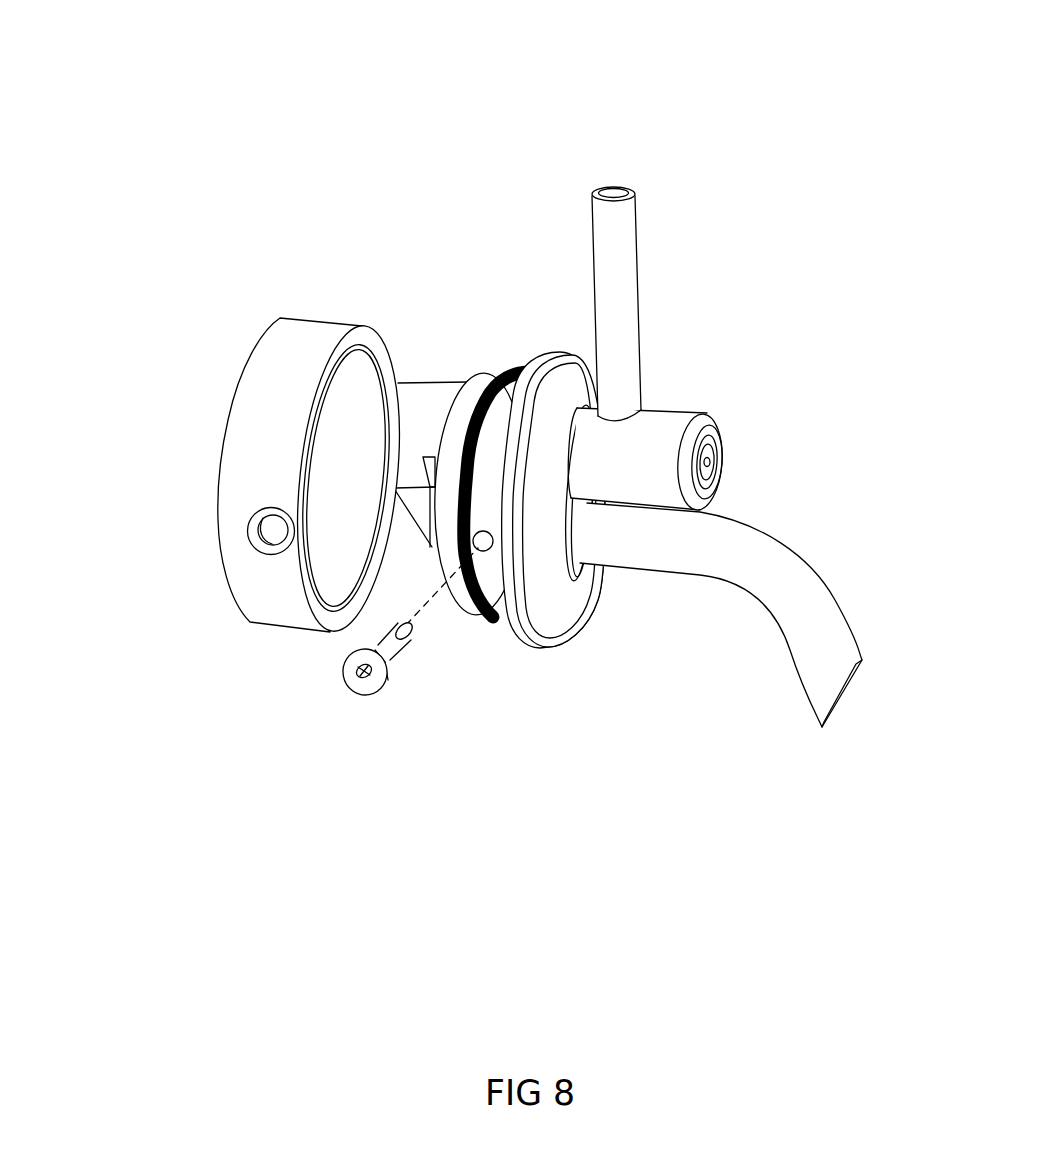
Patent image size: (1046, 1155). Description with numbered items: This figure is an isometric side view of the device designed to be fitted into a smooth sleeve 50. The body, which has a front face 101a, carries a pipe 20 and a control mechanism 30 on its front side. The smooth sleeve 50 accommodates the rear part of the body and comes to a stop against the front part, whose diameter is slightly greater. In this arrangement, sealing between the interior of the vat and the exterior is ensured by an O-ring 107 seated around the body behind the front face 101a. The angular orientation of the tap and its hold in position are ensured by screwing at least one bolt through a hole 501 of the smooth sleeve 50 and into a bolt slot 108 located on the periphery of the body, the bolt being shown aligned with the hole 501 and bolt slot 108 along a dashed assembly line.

The pipe 20 is at (747, 522).
The control mechanism 30 is at (670, 407).
The smooth sleeve 50 is at (228, 476).
The hole 501 is at (248, 527).
The front face 101a is at (560, 600).
The O-ring 107 is at (508, 377).
The bolt slot 108 is at (484, 548).